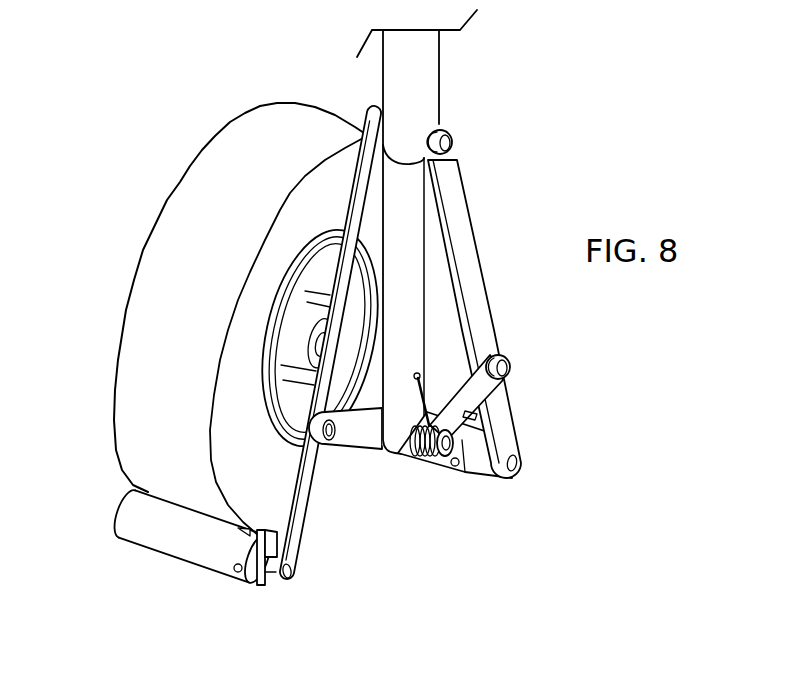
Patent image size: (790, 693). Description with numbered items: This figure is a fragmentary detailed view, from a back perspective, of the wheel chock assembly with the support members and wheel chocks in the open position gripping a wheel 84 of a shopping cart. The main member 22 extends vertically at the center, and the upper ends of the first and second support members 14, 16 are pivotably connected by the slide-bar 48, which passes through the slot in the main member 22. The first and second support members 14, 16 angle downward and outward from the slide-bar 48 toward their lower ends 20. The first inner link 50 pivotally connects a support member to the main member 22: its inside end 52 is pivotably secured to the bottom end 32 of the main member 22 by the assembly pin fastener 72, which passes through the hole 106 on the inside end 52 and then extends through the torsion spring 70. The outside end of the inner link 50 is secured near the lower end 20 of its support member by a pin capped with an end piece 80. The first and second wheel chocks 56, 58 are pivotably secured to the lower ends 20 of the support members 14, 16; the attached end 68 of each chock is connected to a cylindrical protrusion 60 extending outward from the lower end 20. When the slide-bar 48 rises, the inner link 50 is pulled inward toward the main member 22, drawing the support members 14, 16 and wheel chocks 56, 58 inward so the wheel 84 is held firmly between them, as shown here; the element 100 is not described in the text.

The wheel 84 is at (222, 165).
The slide-bar 48 is at (448, 143).
The main member 22 is at (405, 323).
The end piece 80 is at (510, 368).
The first inner link 50 is at (480, 398).
The first support member 14 is at (503, 425).
The second support member 16 is at (302, 505).
The lower end 20 is at (365, 430).
The inside end 52 is at (513, 468).
The first wheel chock 56 is at (470, 463).
The assembly pin fastener 72 is at (442, 462).
The torsion spring 70 is at (417, 445).
The bottom end 32 is at (402, 458).
The hole 106 is at (410, 460).
The second wheel chock 58 is at (197, 550).
The cylindrical protrusion 60 is at (268, 580).
The attached end 68 is at (234, 573).
The cylinder end cap 100 is at (120, 532).